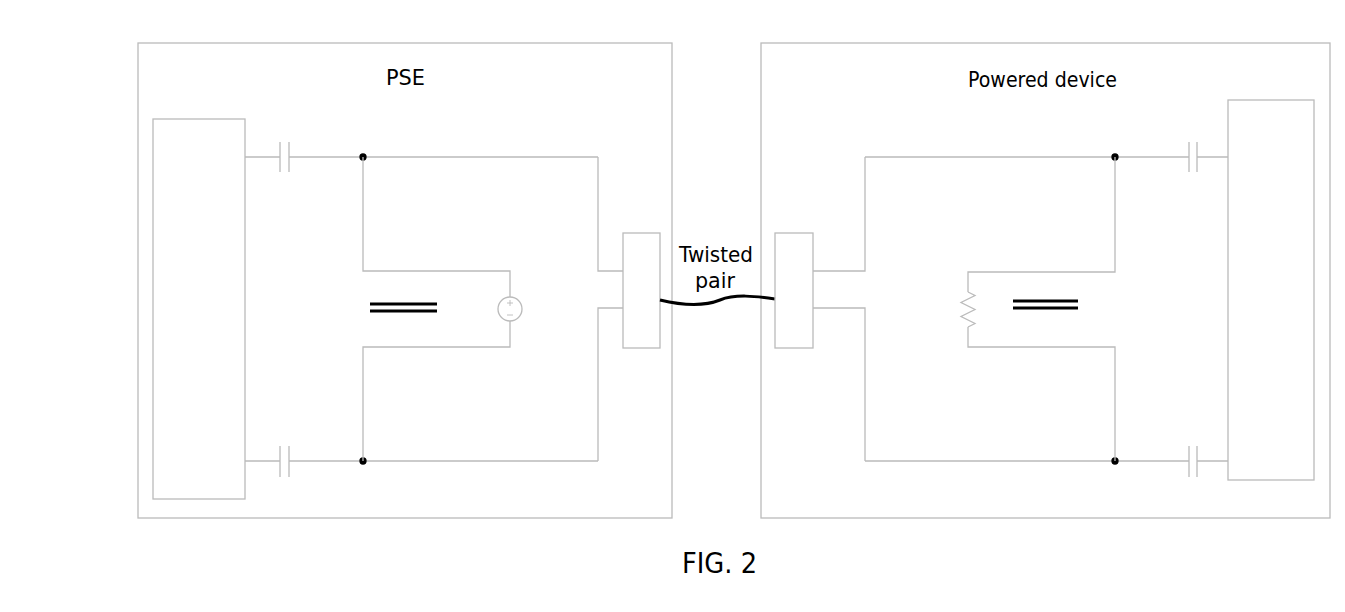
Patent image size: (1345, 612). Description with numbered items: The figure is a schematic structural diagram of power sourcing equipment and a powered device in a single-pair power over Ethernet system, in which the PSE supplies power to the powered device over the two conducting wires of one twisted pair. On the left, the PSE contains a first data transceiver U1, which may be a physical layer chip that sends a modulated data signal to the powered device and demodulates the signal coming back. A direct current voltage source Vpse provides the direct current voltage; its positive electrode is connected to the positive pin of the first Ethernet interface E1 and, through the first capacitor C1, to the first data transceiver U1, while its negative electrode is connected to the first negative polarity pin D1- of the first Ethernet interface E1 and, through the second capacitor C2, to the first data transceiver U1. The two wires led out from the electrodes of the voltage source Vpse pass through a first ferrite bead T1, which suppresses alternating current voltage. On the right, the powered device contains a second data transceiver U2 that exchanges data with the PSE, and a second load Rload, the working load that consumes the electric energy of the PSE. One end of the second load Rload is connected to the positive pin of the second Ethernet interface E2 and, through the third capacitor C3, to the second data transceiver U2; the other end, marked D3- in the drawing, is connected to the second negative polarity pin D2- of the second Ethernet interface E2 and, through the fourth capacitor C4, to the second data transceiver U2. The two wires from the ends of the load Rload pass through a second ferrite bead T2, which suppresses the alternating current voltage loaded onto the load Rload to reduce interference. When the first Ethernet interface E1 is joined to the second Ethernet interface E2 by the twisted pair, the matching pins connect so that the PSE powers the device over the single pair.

The first data transceiver U1 is at (199, 309).
The second data transceiver U2 is at (1271, 290).
The first capacitor C1 is at (421, 144).
The second capacitor C2 is at (421, 447).
The third capacitor C3 is at (1046, 171).
The fourth capacitor C4 is at (1046, 474).
The first ferrite bead T1 is at (403, 322).
The second ferrite bead T2 is at (1045, 319).
The direct current voltage source Vpse is at (483, 309).
The first Ethernet interface E1 is at (641, 290).
The second Ethernet interface E2 is at (794, 290).
The second load Rload is at (933, 309).
The first negative polarity pin D1- is at (587, 379).
The second negative polarity pin D2- is at (839, 384).
The negative load terminal D3- is at (1037, 394).